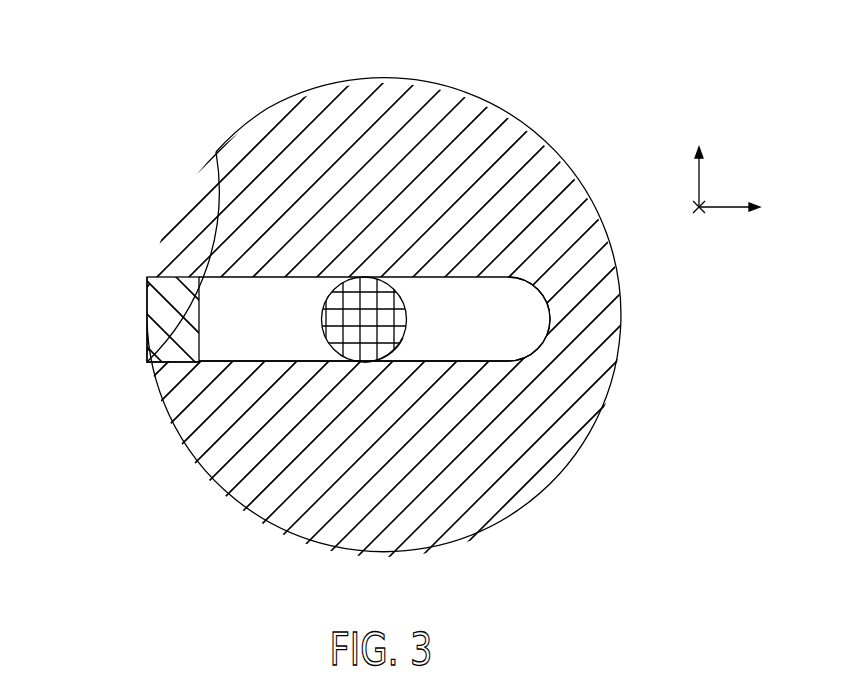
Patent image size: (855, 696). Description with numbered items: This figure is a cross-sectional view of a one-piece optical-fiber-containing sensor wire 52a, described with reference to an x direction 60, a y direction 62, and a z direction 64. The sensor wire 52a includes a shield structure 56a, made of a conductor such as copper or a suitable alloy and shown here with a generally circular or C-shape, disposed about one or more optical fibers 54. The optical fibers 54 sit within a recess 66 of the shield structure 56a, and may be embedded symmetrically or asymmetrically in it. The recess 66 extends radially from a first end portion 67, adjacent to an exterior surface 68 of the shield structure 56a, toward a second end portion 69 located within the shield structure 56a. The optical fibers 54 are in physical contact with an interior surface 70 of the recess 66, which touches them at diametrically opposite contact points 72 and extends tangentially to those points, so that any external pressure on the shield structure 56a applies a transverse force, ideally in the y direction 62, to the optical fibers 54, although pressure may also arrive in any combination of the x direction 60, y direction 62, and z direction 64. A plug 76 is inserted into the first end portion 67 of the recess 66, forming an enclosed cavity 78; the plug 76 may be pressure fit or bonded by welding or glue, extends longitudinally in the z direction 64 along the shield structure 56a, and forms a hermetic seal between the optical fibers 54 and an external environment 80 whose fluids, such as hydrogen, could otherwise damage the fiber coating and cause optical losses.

The one-piece optical-fiber-containing sensor wire 52a is at (151, 49).
The optical fibers 54 is at (403, 338).
The shield structure 56a is at (552, 149).
The x direction 60 is at (727, 207).
The y direction 62 is at (702, 180).
The z direction 64 is at (696, 207).
The recess 66 is at (517, 305).
The first end portion 67 is at (147, 364).
The exterior surface 68 is at (268, 108).
The second end portion 69 is at (540, 348).
The interior surface 70 is at (302, 362).
The diametrically opposite contact points 72 is at (367, 277).
The plug 76 is at (147, 323).
The enclosed cavity 78 is at (270, 298).
The external environment 80 is at (620, 101).